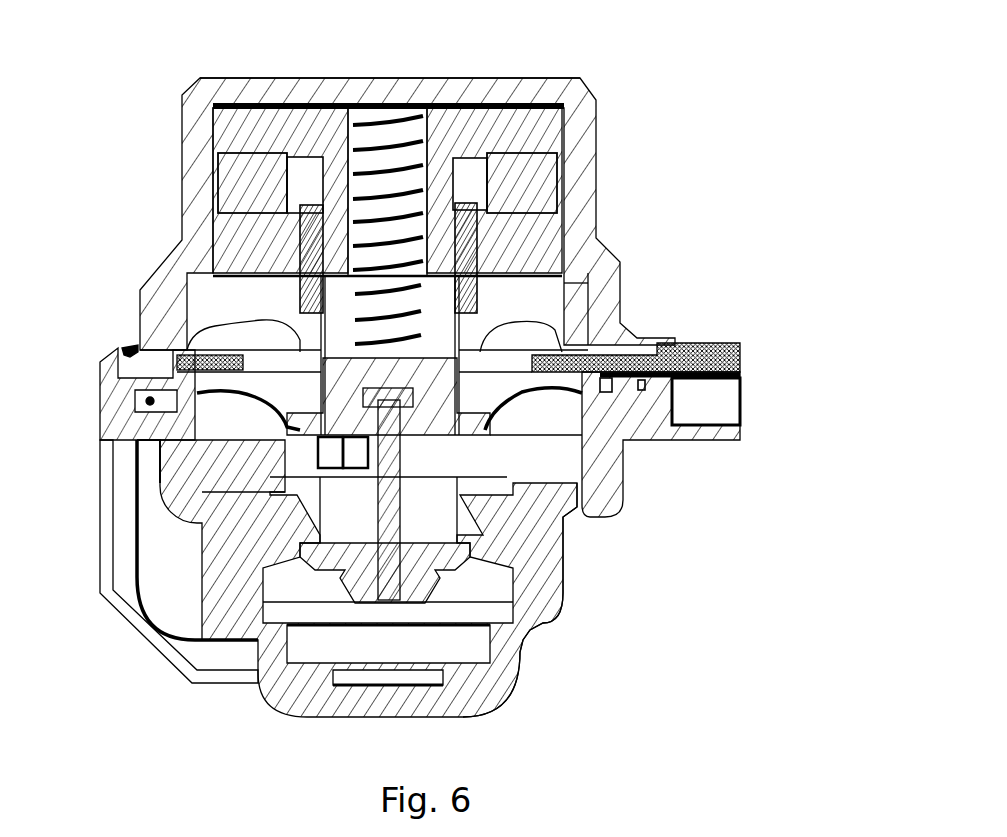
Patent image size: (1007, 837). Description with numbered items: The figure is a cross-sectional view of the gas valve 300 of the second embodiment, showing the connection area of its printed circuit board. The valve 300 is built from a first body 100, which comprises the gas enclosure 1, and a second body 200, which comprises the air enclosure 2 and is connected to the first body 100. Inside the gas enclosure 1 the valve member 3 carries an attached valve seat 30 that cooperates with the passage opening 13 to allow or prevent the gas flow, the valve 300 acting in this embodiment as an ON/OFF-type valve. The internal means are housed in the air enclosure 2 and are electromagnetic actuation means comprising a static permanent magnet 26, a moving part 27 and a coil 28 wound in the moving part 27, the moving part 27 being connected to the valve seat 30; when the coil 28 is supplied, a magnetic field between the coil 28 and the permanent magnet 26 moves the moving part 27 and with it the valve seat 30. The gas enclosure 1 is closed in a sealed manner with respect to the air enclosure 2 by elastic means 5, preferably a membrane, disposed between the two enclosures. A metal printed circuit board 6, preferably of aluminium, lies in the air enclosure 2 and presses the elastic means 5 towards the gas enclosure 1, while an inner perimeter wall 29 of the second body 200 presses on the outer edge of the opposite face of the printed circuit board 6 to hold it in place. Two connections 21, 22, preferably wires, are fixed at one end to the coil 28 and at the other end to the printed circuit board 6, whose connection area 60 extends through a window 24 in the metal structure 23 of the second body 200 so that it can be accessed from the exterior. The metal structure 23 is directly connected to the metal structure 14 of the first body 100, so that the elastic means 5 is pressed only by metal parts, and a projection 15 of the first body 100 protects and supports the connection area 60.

The gas enclosure 1 is at (216, 462).
The air enclosure 2 is at (215, 303).
The valve member 3 is at (323, 580).
The elastic means 5 is at (147, 403).
The printed circuit board 6 is at (603, 380).
The passage opening 13 is at (305, 545).
The metal structure 14 is at (548, 555).
The projection 15 is at (678, 438).
The connection 21 is at (187, 330).
The connection 22 is at (462, 330).
The metal structure 23 is at (462, 92).
The window 24 is at (675, 342).
The permanent magnet 26 is at (243, 167).
The moving part 27 is at (460, 326).
The coil 28 is at (298, 212).
The inner perimeter wall 29 is at (182, 350).
The valve seat 30 is at (428, 556).
The connection area 60 is at (702, 380).
The first body 100 is at (537, 630).
The second body 200 is at (600, 100).
The gas valve 300 is at (395, 60).